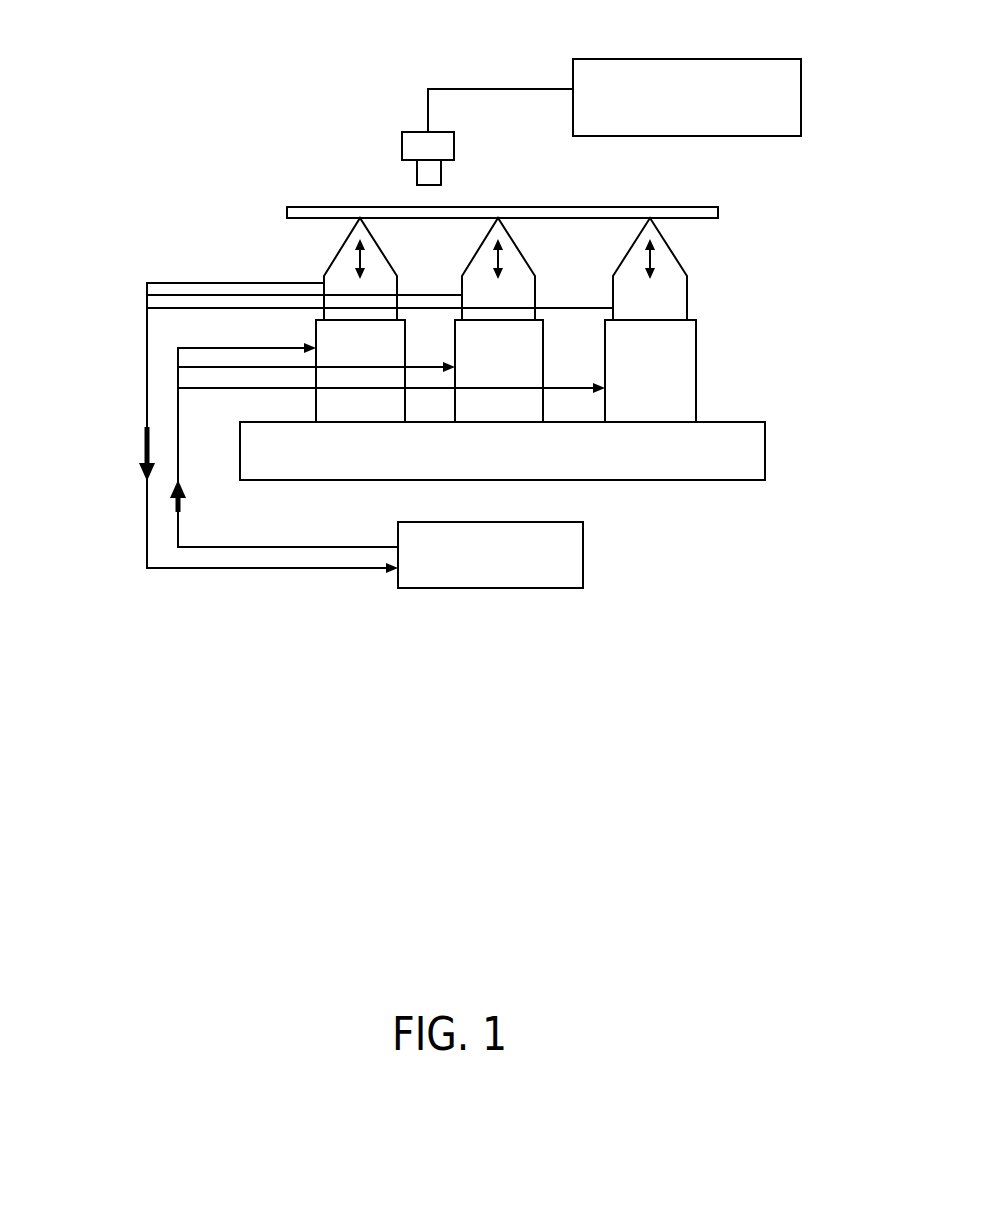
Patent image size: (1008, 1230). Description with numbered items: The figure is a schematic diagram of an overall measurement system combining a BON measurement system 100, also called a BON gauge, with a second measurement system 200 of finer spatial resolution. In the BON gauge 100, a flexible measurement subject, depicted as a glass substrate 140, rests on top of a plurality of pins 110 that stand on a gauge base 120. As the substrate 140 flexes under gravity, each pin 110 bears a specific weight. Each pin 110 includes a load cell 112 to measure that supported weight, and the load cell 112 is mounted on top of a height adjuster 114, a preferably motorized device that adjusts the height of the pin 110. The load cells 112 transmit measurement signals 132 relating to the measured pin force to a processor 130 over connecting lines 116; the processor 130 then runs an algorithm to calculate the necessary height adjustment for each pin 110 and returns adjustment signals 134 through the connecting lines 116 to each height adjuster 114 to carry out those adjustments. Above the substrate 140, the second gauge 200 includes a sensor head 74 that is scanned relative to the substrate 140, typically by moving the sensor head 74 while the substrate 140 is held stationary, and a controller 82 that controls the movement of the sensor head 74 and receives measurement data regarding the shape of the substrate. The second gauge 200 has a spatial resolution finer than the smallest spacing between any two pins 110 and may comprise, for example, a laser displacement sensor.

The second measurement system 200 is at (482, 45).
The controller 82 is at (801, 80).
The sensor head 74 is at (414, 171).
The BON measurement system 100 is at (196, 232).
The glass substrate 140 is at (718, 212).
The pins 110 is at (762, 312).
The load cell 112 is at (687, 290).
The height adjuster 114 is at (696, 370).
The gauge base 120 is at (765, 450).
The measurement signals 132 is at (143, 452).
The adjustment signals 134 is at (184, 502).
The connecting lines 116 is at (232, 547).
The processor 130 is at (583, 548).